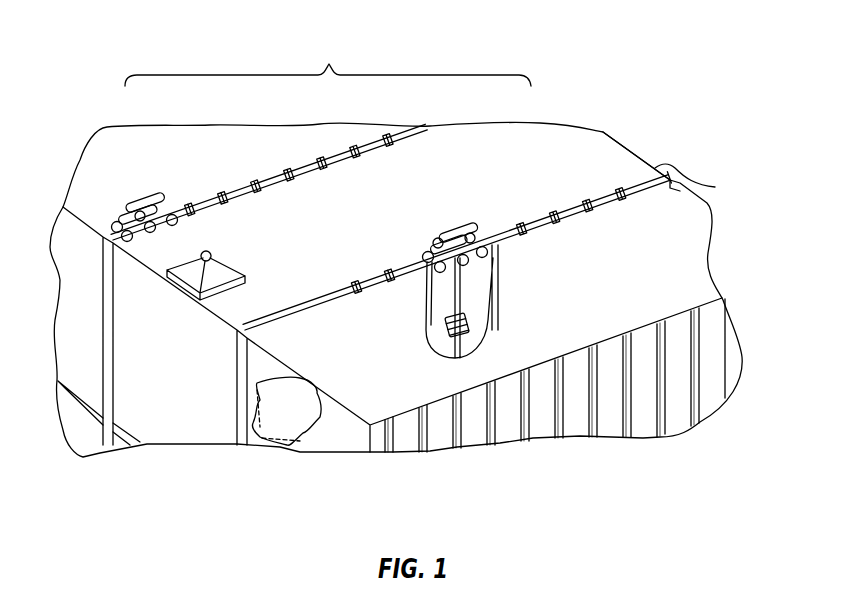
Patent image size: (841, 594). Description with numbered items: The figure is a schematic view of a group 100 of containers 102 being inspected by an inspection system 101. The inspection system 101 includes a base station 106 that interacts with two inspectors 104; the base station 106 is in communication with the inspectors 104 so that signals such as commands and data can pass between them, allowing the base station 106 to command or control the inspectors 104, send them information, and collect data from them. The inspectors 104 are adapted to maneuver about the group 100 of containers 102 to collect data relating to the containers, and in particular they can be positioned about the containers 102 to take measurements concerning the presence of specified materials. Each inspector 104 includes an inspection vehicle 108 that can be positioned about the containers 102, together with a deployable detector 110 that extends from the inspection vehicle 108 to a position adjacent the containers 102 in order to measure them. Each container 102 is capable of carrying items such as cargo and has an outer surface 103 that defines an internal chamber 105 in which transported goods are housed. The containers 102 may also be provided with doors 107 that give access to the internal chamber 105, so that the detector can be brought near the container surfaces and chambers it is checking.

The group 100 is at (722, 76).
The inspection system 101 is at (329, 63).
The container 102 is at (697, 220).
The outer surface 103 is at (602, 163).
The inspector 104 is at (148, 195).
The internal chamber 105 is at (303, 422).
The base station 106 is at (213, 303).
The door 107 is at (90, 362).
The inspection vehicle 108 is at (203, 202).
The deployable detector 110 is at (473, 353).